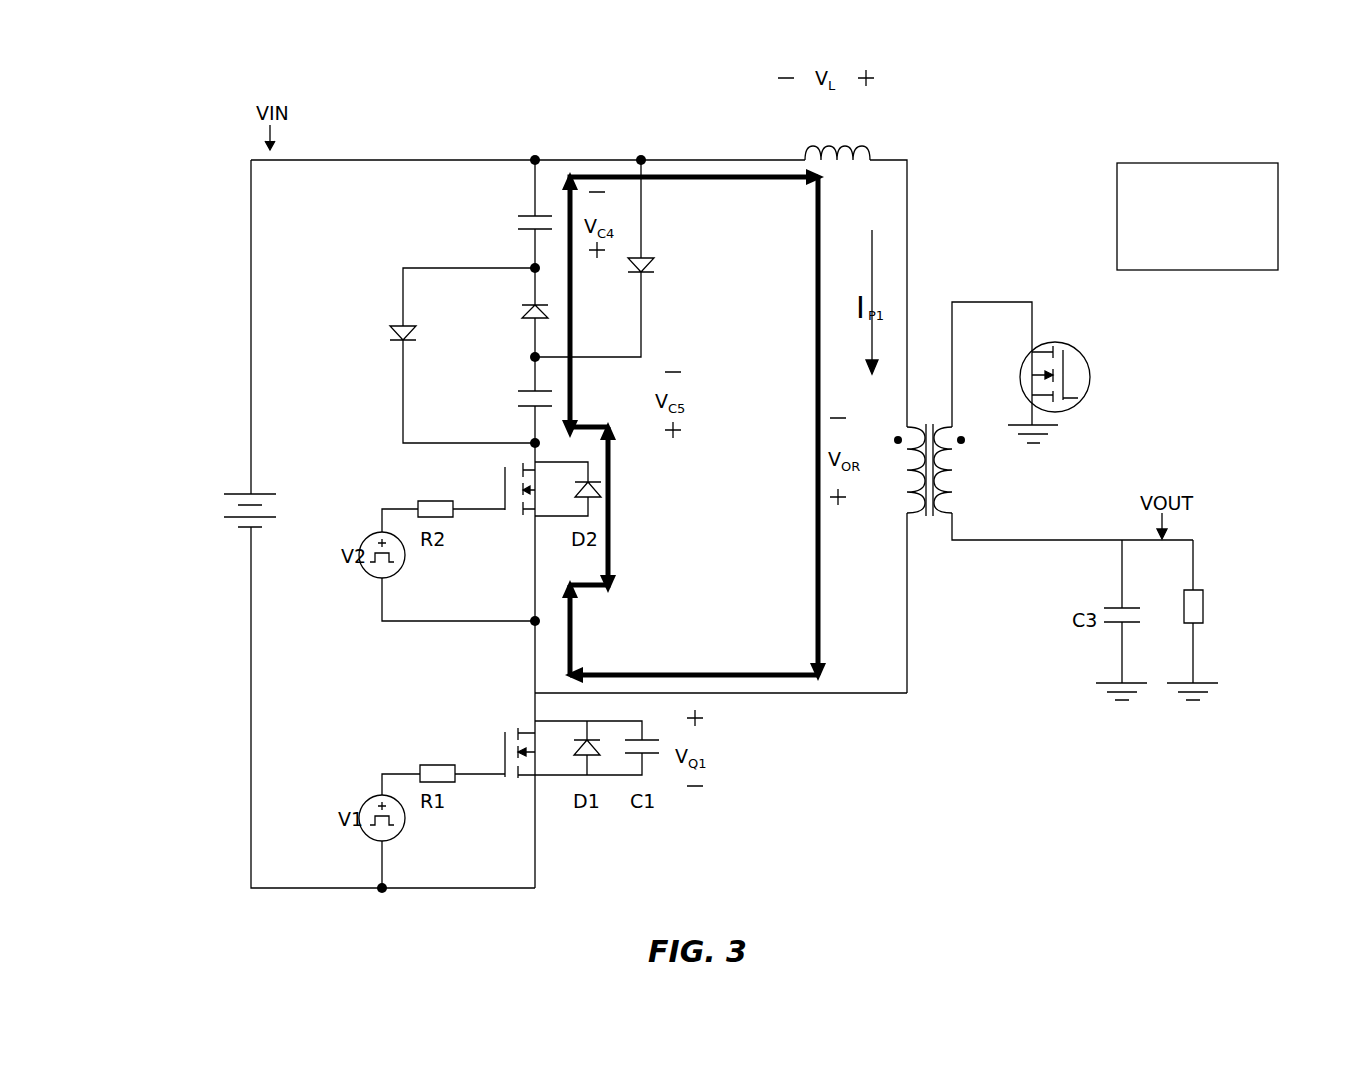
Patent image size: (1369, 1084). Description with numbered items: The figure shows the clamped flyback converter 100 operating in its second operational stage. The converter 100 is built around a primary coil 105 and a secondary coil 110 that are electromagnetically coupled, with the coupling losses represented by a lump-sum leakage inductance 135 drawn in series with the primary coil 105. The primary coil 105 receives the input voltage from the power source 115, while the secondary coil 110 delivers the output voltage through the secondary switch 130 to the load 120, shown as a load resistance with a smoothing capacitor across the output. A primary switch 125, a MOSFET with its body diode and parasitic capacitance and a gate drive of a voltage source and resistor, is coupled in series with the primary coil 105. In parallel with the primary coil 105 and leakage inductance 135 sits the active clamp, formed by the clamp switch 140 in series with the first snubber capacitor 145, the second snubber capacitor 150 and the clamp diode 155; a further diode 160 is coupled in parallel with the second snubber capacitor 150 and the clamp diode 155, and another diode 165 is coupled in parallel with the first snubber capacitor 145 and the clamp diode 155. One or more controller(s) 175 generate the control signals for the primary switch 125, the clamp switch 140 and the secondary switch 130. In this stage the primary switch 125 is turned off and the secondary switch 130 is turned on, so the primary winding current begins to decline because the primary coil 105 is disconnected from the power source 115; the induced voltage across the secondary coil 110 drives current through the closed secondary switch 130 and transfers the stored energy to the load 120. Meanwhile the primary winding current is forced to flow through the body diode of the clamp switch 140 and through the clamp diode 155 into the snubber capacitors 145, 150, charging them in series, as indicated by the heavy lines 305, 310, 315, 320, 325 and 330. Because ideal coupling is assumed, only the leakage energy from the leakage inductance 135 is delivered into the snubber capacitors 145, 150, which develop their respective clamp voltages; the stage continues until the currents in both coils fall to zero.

The flyback converter 100 is at (150, 78).
The power source 115 is at (236, 492).
The snubber capacitor C4 145 is at (522, 214).
The diode D4 155 is at (522, 303).
The snubber capacitor C5 150 is at (522, 390).
The diode D5 160 is at (398, 324).
The diode D6 165 is at (650, 260).
The clamp switch Q2 140 is at (503, 490).
The primary switch Q1 125 is at (504, 755).
The leakage inductance L1 135 is at (838, 147).
The primary coil P1 105 is at (910, 488).
The secondary coil S1 110 is at (953, 488).
The secondary switch Q3 130 is at (1036, 352).
The load 120 is at (1200, 590).
The controller(s) 175 is at (1280, 213).
The line 305 is at (815, 452).
The line 310 is at (740, 668).
The line 315 is at (573, 638).
The line 320 is at (612, 585).
The line 325 is at (573, 408).
The line 330 is at (792, 180).